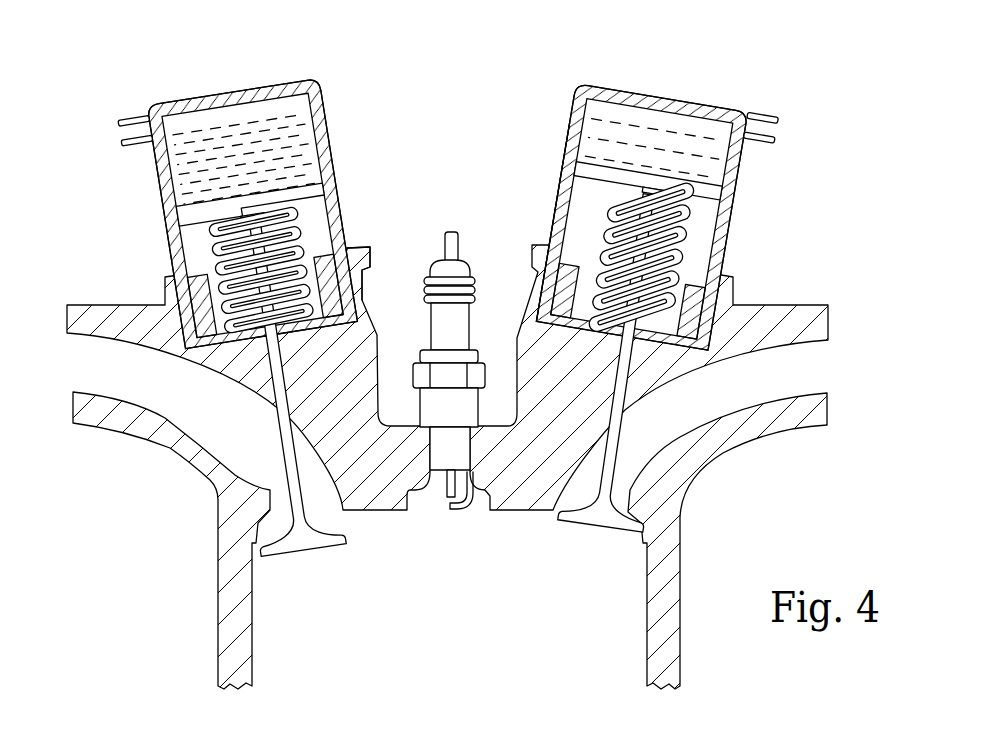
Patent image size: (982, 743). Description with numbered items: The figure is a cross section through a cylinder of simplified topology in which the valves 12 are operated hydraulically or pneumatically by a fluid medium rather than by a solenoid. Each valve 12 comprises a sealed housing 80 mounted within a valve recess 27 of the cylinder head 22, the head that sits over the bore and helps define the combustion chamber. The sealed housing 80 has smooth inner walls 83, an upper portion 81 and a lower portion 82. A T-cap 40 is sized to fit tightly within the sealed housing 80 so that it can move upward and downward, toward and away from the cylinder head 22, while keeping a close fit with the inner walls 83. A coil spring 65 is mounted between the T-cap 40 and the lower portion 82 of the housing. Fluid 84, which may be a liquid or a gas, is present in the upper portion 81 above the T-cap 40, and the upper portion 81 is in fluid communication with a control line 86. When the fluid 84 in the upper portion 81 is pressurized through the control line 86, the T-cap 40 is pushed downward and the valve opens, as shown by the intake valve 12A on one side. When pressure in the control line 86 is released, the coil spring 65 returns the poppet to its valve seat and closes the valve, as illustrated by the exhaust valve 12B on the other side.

The valve 12 is at (465, 282).
The intake valve 12A is at (269, 282).
The exhaust valve 12B is at (657, 272).
The cylinder head 22 is at (528, 513).
The valve recess 27 is at (349, 237).
The T-cap 40 is at (708, 200).
The coil spring 65 is at (693, 262).
The sealed housing 80 is at (342, 190).
The upper portion 81 is at (575, 118).
The lower portion 82 is at (556, 218).
The inner walls 83 is at (195, 247).
The fluid 84 is at (242, 123).
The control line 86 is at (143, 115).